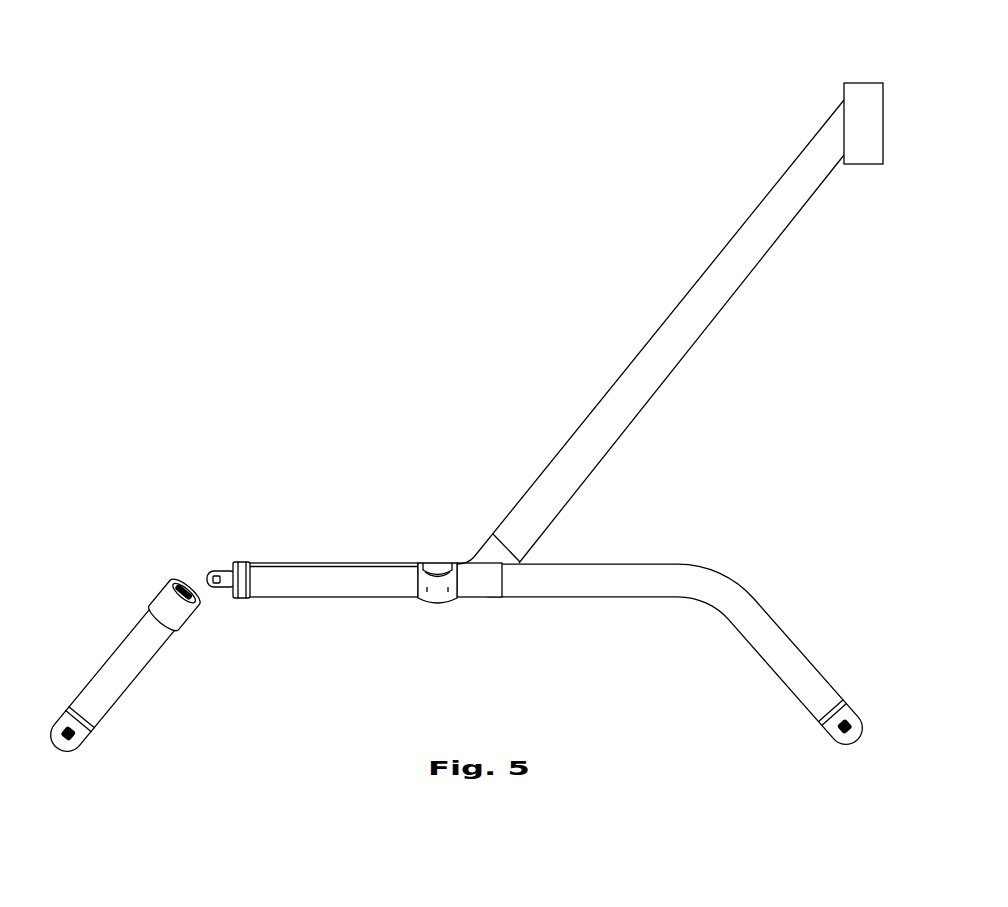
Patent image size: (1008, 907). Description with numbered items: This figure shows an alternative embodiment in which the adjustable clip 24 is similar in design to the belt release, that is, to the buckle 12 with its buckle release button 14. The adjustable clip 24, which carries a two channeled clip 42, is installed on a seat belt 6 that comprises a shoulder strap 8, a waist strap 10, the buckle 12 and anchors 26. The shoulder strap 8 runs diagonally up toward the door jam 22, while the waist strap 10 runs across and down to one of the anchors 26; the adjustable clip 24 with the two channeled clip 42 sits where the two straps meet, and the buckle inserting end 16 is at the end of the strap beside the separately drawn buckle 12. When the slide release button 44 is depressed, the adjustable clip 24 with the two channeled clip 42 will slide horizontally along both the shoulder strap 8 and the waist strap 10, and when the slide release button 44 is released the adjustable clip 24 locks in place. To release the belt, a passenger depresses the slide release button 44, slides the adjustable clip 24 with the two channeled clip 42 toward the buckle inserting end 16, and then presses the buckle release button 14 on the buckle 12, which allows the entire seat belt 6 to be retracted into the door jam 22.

The seat belt 6 is at (541, 414).
The shoulder strap 8 is at (717, 312).
The waist strap 10 is at (717, 572).
The buckle 12 is at (149, 658).
The buckle release button 14 is at (165, 593).
The buckle inserting end 16 is at (232, 567).
The door jam 22 is at (843, 95).
The adjustable clip 24 is at (460, 610).
The anchors 26 is at (80, 742).
The two channeled clip 42 is at (482, 560).
The slide release button 44 is at (435, 565).